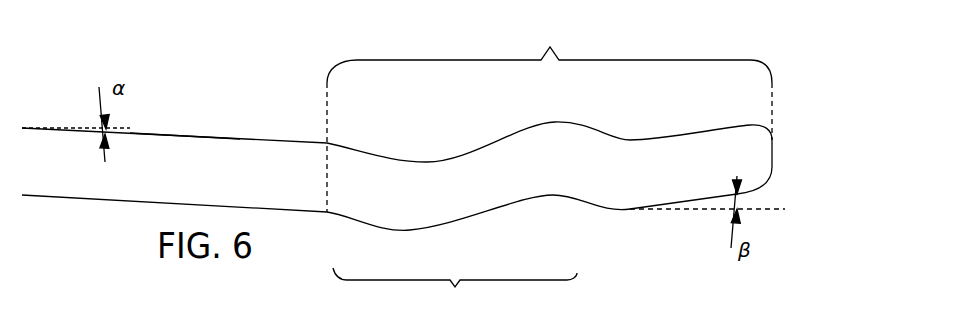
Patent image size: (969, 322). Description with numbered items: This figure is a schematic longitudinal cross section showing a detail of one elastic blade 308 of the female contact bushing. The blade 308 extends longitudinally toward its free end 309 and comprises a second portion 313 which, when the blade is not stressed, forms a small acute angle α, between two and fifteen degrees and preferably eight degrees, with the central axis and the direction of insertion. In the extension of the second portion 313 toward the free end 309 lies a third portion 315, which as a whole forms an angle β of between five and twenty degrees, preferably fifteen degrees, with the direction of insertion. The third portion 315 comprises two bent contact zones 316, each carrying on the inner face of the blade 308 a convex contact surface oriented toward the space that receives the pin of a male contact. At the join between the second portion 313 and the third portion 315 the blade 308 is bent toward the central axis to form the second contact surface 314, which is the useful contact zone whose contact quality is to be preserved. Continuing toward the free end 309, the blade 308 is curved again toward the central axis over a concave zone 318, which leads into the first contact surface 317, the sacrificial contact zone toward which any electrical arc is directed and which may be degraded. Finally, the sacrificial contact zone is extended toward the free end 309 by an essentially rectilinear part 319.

The elastic blade 308 is at (280, 136).
The free end 309 is at (778, 147).
The second portion 313 is at (183, 158).
The second contact surface 314 is at (439, 230).
The third portion 315 is at (549, 51).
The bent contact zone 316 is at (455, 294).
The first contact surface 317 is at (628, 208).
The concave zone 318 is at (553, 118).
The essentially rectilinear part 319 is at (656, 135).